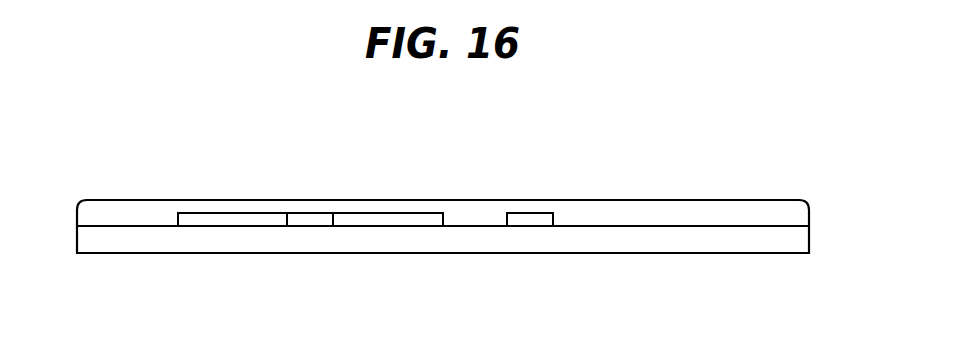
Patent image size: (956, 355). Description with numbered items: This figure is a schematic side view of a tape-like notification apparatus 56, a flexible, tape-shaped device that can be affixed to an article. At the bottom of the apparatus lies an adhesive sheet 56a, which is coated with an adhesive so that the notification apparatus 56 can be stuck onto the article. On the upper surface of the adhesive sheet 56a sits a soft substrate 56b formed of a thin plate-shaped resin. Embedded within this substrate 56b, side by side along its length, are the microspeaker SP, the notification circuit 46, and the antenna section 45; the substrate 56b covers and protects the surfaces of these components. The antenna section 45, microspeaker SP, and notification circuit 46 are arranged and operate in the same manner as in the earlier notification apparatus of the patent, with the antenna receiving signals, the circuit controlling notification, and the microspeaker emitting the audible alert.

The tape-like notification apparatus 56 is at (619, 158).
The adhesive sheet 56a is at (690, 242).
The substrate 56b is at (725, 206).
The microspeaker SP is at (308, 218).
The notification circuit 46 is at (400, 218).
The antenna section 45 is at (535, 218).